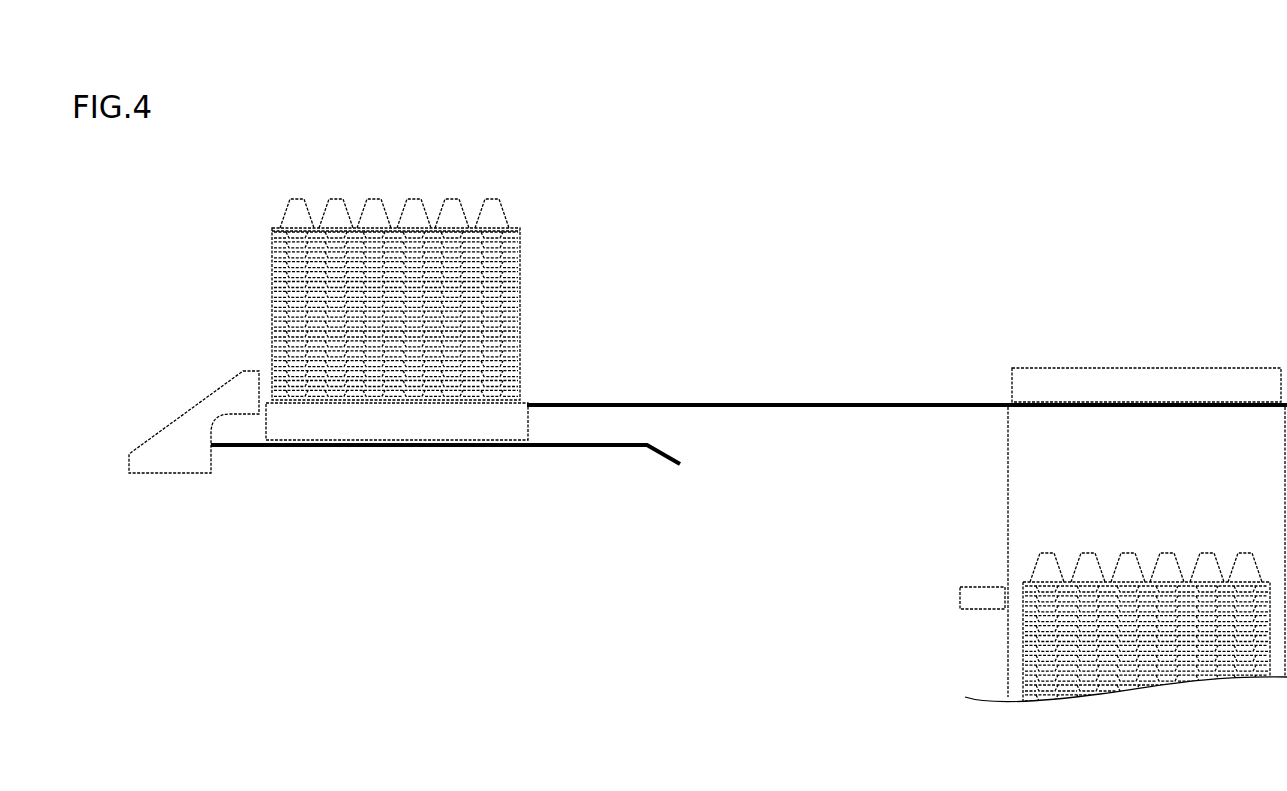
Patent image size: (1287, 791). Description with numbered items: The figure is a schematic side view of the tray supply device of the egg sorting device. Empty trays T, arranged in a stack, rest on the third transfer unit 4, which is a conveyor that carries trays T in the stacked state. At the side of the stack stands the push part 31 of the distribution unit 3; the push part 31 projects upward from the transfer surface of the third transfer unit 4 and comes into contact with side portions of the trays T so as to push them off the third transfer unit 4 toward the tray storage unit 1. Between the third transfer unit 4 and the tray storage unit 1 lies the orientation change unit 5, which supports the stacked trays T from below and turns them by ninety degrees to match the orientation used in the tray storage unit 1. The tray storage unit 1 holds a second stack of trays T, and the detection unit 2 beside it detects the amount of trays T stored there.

The tray storage unit 1 is at (1003, 477).
The detection unit 2 is at (958, 598).
The distribution unit 3 is at (271, 168).
The push part 31 is at (249, 371).
The third transfer unit 4 is at (339, 421).
The orientation change unit 5 is at (830, 425).
The tray T is at (335, 199).